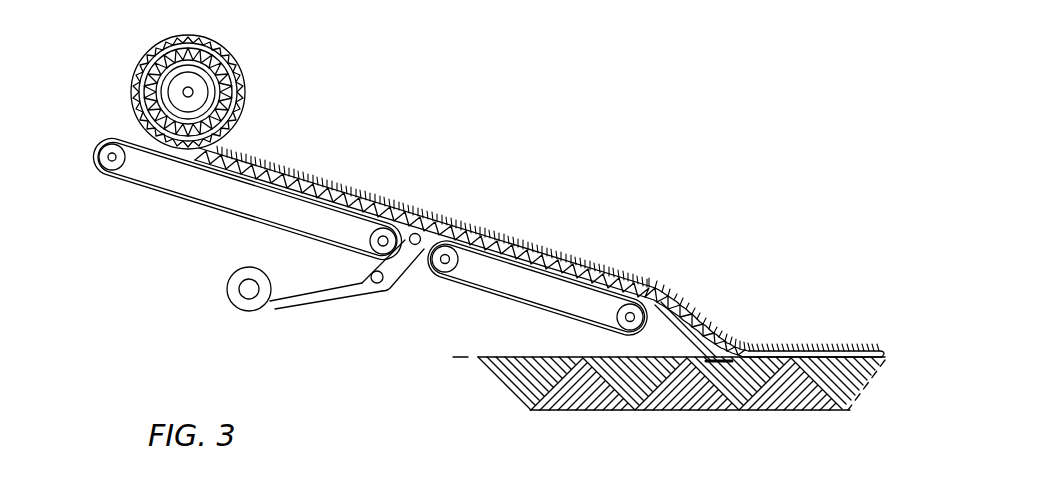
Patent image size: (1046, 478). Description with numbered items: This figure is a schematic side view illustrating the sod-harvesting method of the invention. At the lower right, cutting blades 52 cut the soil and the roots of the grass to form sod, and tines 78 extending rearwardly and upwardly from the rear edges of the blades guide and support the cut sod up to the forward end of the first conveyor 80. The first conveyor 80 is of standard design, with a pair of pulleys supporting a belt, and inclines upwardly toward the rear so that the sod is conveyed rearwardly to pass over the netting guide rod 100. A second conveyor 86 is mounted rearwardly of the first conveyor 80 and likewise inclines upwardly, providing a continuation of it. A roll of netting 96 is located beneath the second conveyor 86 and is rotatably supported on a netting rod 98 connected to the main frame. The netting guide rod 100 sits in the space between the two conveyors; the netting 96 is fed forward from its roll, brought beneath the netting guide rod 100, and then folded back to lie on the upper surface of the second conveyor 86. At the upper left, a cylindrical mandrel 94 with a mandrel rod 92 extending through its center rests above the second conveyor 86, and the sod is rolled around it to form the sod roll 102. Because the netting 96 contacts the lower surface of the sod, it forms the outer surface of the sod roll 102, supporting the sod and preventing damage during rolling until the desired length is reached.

The cutting blades 52 is at (720, 380).
The tines 78 is at (650, 328).
The first conveyor 80 is at (510, 306).
The second conveyor 86 is at (181, 202).
The mandrel rod 92 is at (193, 90).
The mandrel 94 is at (170, 96).
The roll of netting 96 is at (246, 268).
The netting rod 98 is at (243, 301).
The netting guide rod 100 is at (411, 247).
The sod roll 102 is at (229, 56).